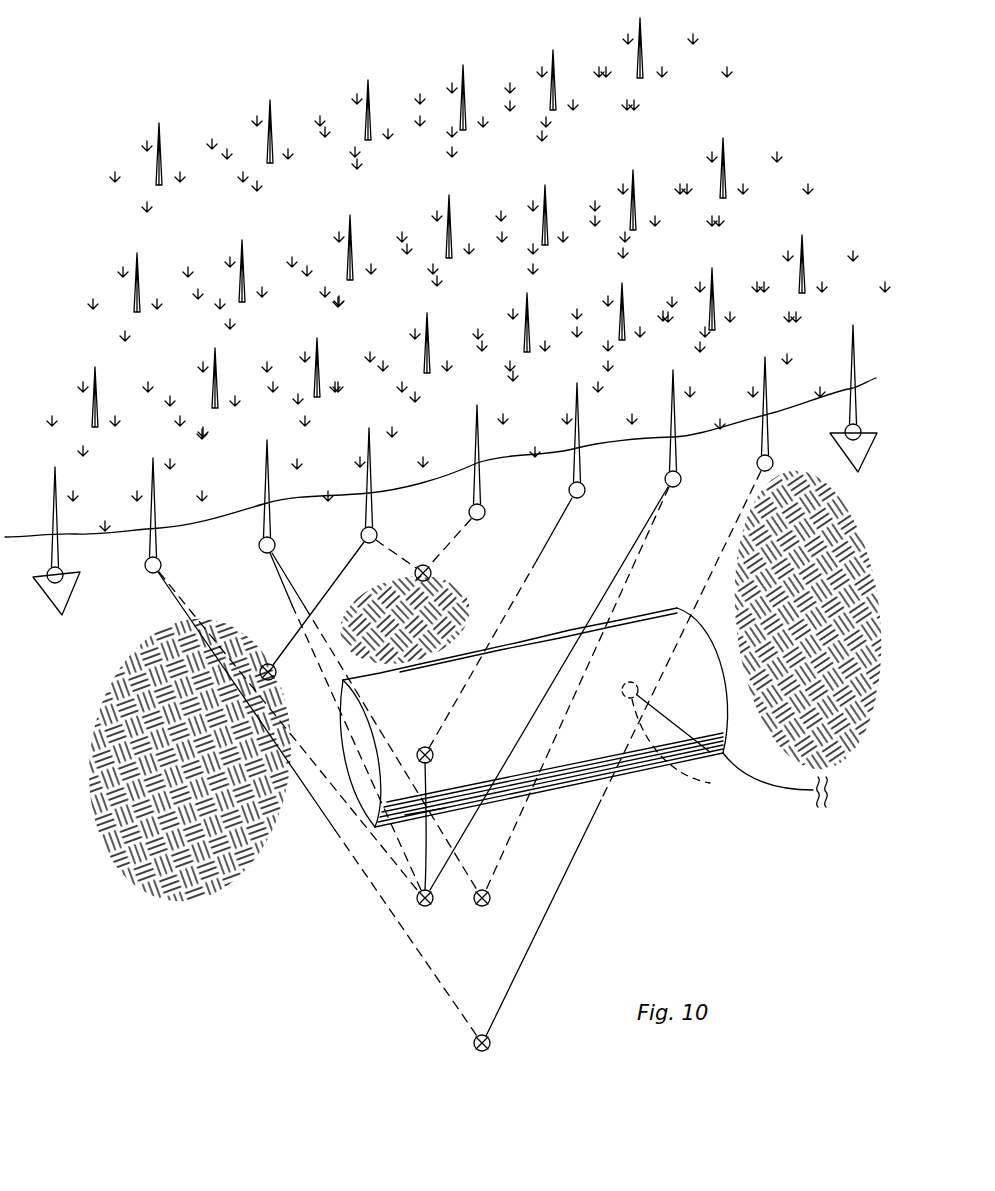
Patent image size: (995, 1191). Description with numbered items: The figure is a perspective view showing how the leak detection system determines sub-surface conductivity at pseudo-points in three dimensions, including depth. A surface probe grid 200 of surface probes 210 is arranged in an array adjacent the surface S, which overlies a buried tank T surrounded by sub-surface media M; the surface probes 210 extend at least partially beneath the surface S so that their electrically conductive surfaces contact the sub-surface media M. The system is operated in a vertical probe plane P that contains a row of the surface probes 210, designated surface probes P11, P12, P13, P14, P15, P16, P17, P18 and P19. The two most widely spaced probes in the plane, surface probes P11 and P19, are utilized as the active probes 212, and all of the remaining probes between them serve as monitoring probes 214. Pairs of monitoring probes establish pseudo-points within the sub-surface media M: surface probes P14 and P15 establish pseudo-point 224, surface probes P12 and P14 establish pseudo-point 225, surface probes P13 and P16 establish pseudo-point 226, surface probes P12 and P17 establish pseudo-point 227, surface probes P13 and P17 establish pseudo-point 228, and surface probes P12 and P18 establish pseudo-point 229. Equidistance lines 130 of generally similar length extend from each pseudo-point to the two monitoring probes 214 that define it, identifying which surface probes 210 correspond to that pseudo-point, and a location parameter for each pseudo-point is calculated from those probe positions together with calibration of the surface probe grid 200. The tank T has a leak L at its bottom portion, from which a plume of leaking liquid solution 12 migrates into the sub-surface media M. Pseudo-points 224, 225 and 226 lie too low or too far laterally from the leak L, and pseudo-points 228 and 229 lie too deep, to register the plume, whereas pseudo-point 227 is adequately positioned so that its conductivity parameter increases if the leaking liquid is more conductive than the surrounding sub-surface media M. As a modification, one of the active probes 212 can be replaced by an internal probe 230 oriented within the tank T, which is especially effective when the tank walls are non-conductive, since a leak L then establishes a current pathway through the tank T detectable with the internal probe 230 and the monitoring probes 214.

The surface probe grid 200 is at (237, 98).
The surface probe 210 is at (140, 262).
The active probe 212 is at (68, 600).
The monitoring probe 214 is at (152, 482).
The pseudo-point 224 is at (431, 568).
The pseudo-point 225 is at (277, 677).
The pseudo-point 226 is at (433, 752).
The pseudo-point 227 is at (418, 904).
The pseudo-point 228 is at (490, 897).
The pseudo-point 229 is at (473, 1045).
The internal probe 230 is at (690, 743).
The equidistance line 130 is at (517, 810).
The leaking liquid solution 12 is at (424, 862).
The leak L is at (425, 812).
The surface S is at (594, 180).
The tank T is at (583, 726).
The sub-surface media M is at (828, 874).
The probe plane P is at (897, 325).
The surface probe P11 is at (59, 553).
The surface probe P12 is at (158, 537).
The surface probe P13 is at (273, 522).
The surface probe P14 is at (374, 508).
The surface probe P15 is at (482, 482).
The surface probe P16 is at (582, 463).
The surface probe P17 is at (678, 448).
The surface probe P18 is at (775, 440).
The surface probe P19 is at (850, 408).